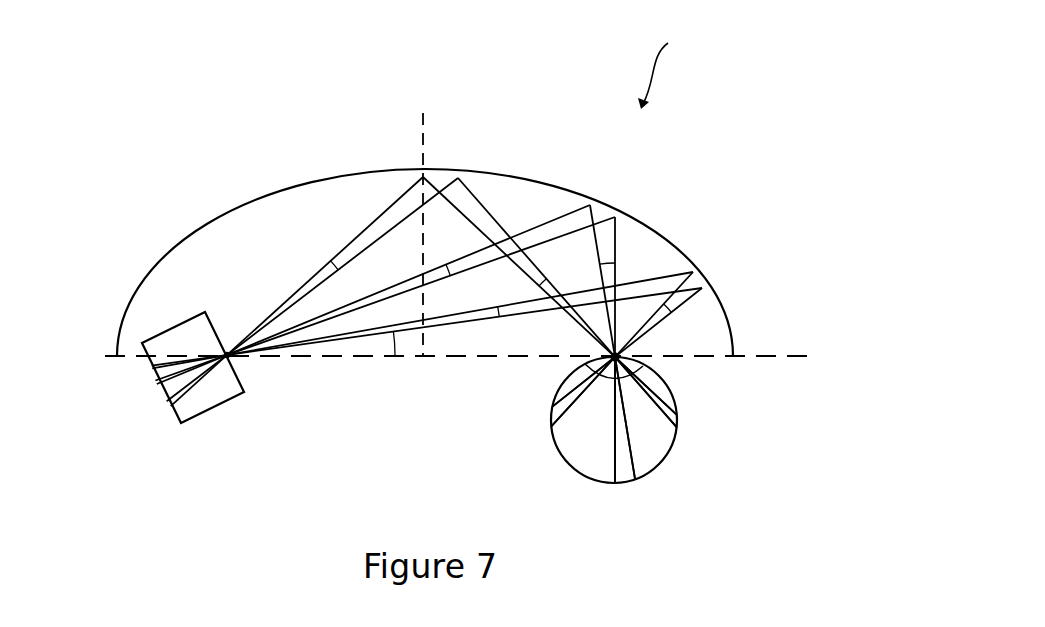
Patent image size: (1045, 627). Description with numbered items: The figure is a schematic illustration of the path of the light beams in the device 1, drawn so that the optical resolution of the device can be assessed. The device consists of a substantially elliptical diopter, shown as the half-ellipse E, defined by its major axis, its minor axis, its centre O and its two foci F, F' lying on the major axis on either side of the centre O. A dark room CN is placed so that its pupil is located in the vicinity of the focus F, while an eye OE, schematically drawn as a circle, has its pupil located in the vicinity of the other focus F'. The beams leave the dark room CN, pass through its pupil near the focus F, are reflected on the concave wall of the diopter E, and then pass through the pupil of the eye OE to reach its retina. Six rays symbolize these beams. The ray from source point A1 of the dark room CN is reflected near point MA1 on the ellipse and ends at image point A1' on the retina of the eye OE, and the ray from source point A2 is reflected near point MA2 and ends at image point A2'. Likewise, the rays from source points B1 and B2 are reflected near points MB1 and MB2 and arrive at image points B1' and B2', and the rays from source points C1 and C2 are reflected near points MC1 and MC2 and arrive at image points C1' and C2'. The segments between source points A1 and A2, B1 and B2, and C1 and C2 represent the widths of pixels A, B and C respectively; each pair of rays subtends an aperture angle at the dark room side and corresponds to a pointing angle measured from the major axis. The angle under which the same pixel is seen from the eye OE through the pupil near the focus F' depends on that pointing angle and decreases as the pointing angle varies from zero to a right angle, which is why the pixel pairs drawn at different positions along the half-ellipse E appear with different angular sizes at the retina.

The optical system / ophthalmic lens arrangement 1 is at (663, 68).
The centre O is at (421, 372).
The half-ellipse E is at (527, 185).
The dark room CN is at (240, 394).
The focus F is at (232, 340).
The focus F' is at (637, 347).
The eye OE is at (667, 462).
The source point A1 is at (359, 320).
The source point A2 is at (358, 313).
The source point B1 is at (379, 328).
The source point B2 is at (387, 327).
The source point C1 is at (288, 329).
The source point C2 is at (290, 321).
The reflection point MA1 is at (607, 326).
The reflection point MA2 is at (634, 338).
The reflection point MB1 is at (641, 338).
The reflection point MB2 is at (654, 341).
The reflection point MC1 is at (529, 282).
The reflection point MC2 is at (562, 288).
The image point A1' is at (640, 435).
The image point A2' is at (604, 435).
The image point B1' is at (566, 409).
The image point B2' is at (559, 386).
The image point C1' is at (670, 388).
The image point C2' is at (670, 402).